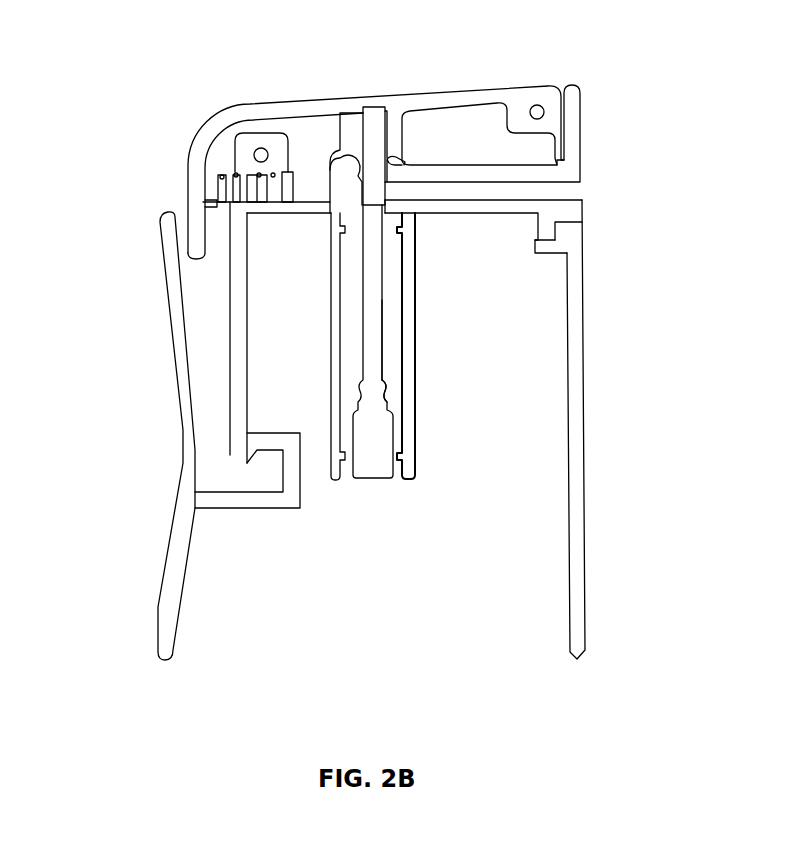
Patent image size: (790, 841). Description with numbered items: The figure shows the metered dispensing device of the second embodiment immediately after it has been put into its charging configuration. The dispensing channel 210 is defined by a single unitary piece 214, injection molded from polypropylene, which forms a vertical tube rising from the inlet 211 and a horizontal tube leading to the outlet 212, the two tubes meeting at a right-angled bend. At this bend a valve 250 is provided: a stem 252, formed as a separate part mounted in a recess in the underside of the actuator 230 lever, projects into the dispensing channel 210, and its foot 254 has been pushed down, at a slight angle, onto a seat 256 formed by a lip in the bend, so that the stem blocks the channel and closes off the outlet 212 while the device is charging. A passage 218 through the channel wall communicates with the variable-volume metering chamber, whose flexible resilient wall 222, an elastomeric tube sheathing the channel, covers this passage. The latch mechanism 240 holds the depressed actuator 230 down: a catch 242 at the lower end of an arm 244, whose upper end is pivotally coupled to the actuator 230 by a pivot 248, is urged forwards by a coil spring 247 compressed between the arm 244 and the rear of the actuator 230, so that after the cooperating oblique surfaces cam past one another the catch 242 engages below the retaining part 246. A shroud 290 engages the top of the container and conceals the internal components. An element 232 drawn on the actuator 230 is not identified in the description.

The dispensing channel 210 is at (470, 197).
The inlet 211 is at (371, 475).
The outlet 212 is at (582, 195).
The single unitary piece 214 is at (395, 378).
The passage 218 is at (372, 397).
The resilient wall 222 is at (415, 340).
The actuator 230 is at (303, 107).
The fastener hole 232 is at (541, 105).
The latch mechanism 240 is at (240, 392).
The catch 242 is at (242, 457).
The arm 244 is at (240, 280).
The retaining part 246 is at (253, 457).
The spring 247 is at (222, 180).
The pivot 248 is at (261, 148).
The valve 250 is at (357, 192).
The stem 252 is at (373, 138).
The foot 254 is at (387, 200).
The seat 256 is at (383, 205).
The shroud 290 is at (584, 507).